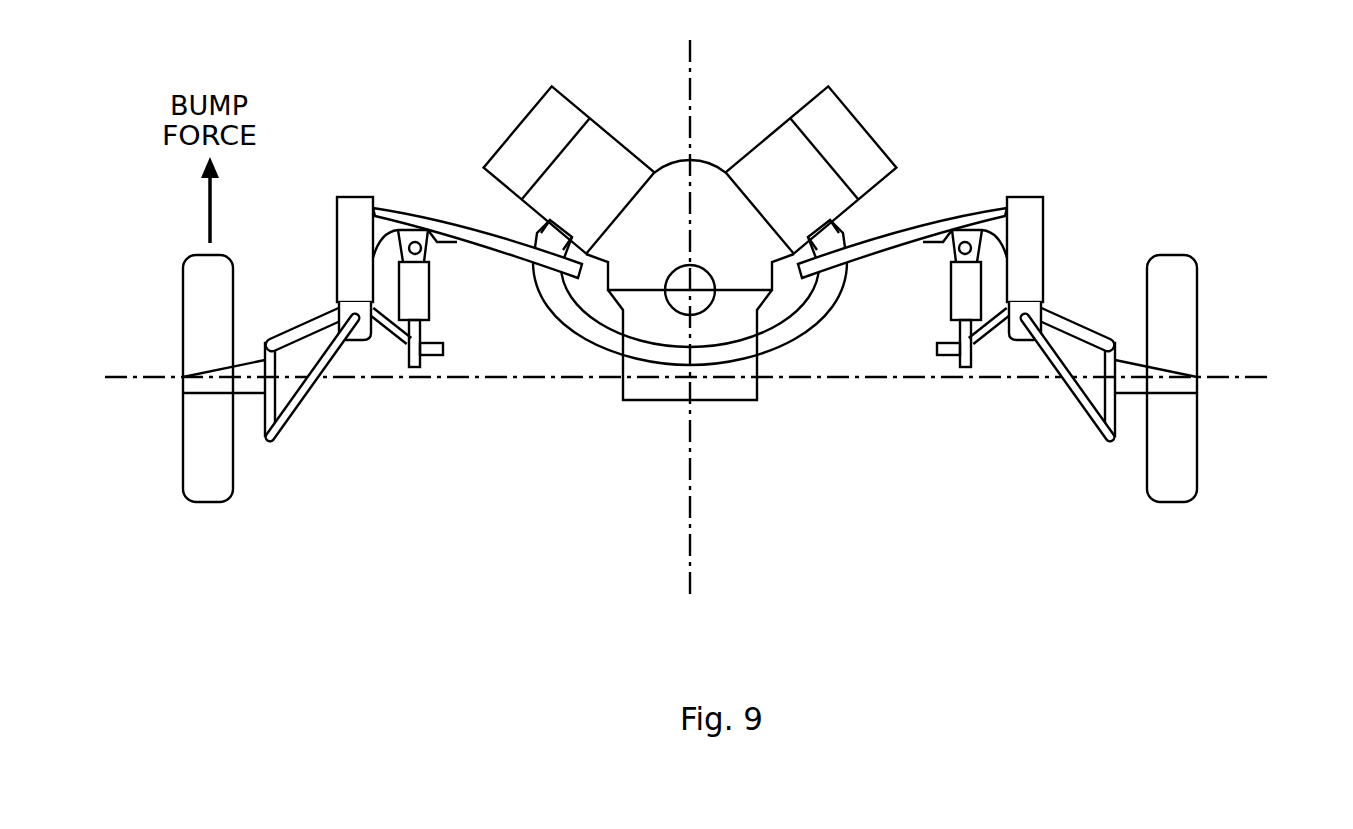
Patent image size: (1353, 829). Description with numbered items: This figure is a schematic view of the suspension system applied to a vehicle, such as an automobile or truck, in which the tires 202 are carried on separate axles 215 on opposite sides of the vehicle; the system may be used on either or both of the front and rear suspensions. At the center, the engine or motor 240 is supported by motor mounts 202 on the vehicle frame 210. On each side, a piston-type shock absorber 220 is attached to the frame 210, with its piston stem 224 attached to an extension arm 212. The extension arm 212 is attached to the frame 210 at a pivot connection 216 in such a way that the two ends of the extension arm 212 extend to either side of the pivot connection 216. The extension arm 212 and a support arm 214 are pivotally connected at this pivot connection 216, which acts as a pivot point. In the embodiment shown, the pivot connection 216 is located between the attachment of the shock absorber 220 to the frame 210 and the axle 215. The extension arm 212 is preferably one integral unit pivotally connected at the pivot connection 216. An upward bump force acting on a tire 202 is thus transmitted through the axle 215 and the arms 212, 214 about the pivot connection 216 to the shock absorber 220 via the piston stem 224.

The tires / motor mounts 202 is at (207, 300).
The vehicle frame 210 is at (337, 227).
The extension arm 212 is at (301, 321).
The support arm 214 is at (298, 417).
The axle 215 is at (245, 393).
The pivot connection 216 is at (377, 315).
The piston-type shock absorber 220 is at (424, 290).
The piston stem 224 is at (415, 332).
The engine or motor 240 is at (705, 177).